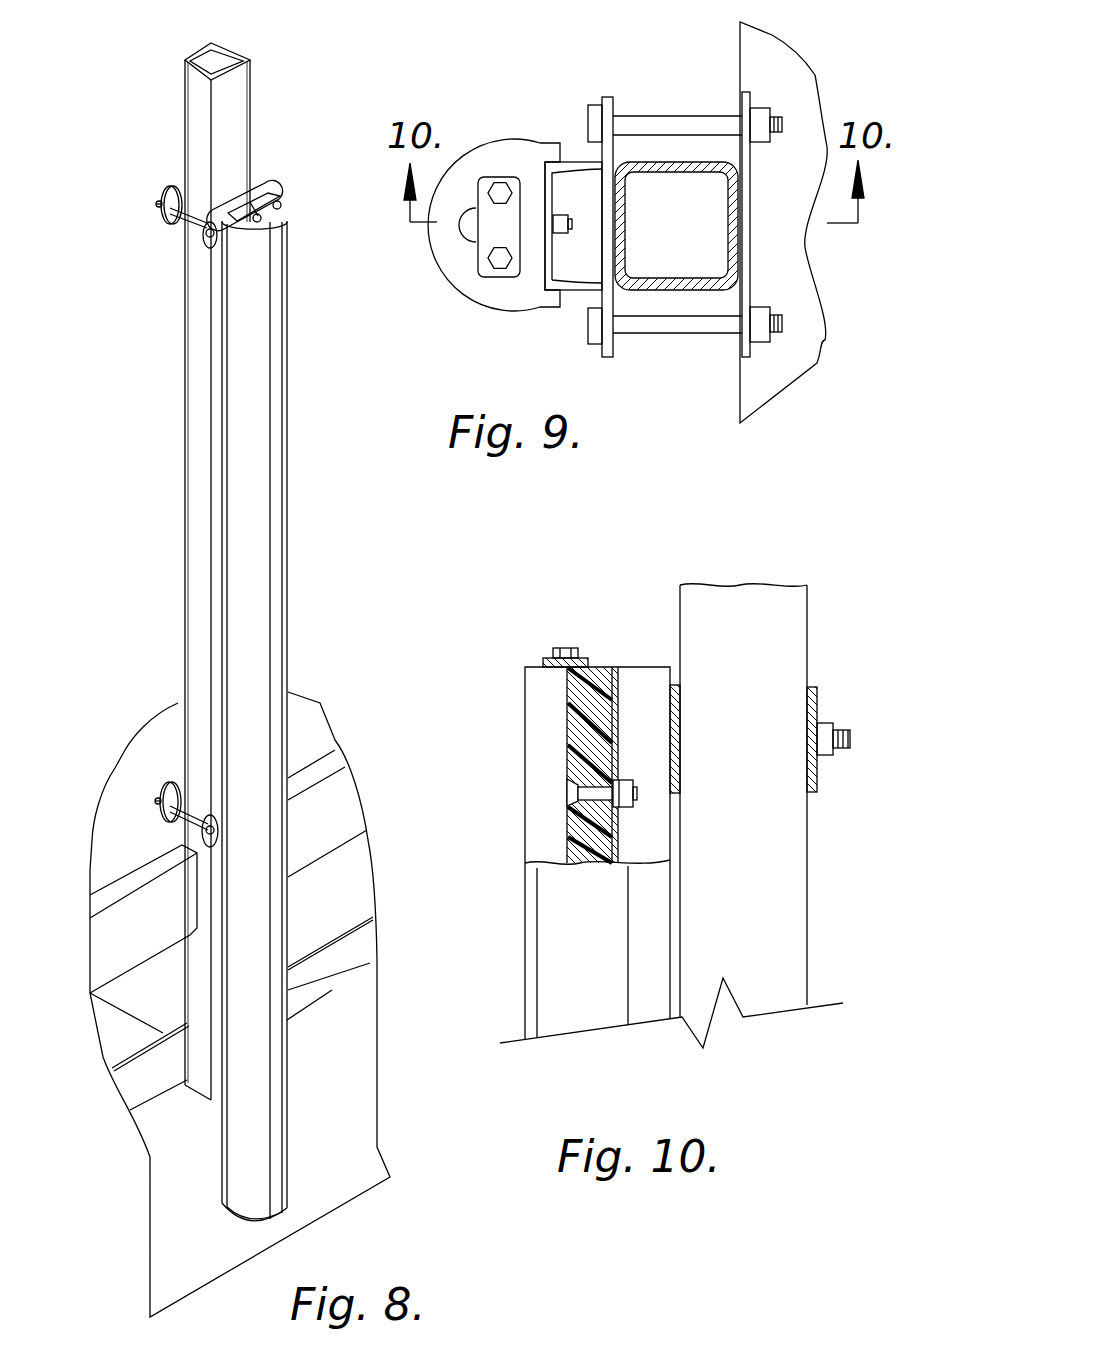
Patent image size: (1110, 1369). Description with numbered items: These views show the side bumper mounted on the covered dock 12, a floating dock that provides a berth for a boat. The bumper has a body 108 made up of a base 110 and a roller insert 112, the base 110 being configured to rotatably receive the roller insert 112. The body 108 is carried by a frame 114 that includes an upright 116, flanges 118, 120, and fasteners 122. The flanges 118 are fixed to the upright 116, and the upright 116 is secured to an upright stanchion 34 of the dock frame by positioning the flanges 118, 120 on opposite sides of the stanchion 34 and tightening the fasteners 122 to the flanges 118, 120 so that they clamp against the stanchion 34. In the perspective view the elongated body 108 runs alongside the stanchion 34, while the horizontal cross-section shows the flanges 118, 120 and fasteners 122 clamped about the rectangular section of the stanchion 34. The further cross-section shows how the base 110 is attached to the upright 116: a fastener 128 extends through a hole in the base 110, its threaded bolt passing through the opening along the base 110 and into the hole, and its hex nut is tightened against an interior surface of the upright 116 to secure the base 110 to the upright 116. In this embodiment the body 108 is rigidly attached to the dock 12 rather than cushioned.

In FIG. 8, the covered dock 12 is at (125, 797).
In FIG. 9, the covered dock 12 is at (772, 385).
In FIG. 8, the upright stanchion 34 is at (200, 134).
In FIG. 9, the upright stanchion 34 is at (652, 285).
In FIG. 10, the upright stanchion 34 is at (750, 603).
In FIG. 8, the body 108 is at (258, 333).
In FIG. 8, the base 110 is at (255, 393).
In FIG. 8, the roller insert 112 is at (273, 460).
In FIG. 8, the frame 114 is at (167, 223).
In FIG. 9, the frame 114 is at (580, 165).
In FIG. 9, the upright 116 is at (580, 283).
In FIG. 10, the upright 116 is at (648, 672).
In FIG. 9, the flange 118 is at (607, 100).
In FIG. 9, the flange 120 is at (745, 92).
In FIG. 9, the fastener 122 is at (630, 118).
In FIG. 10, the fastener 128 is at (565, 792).